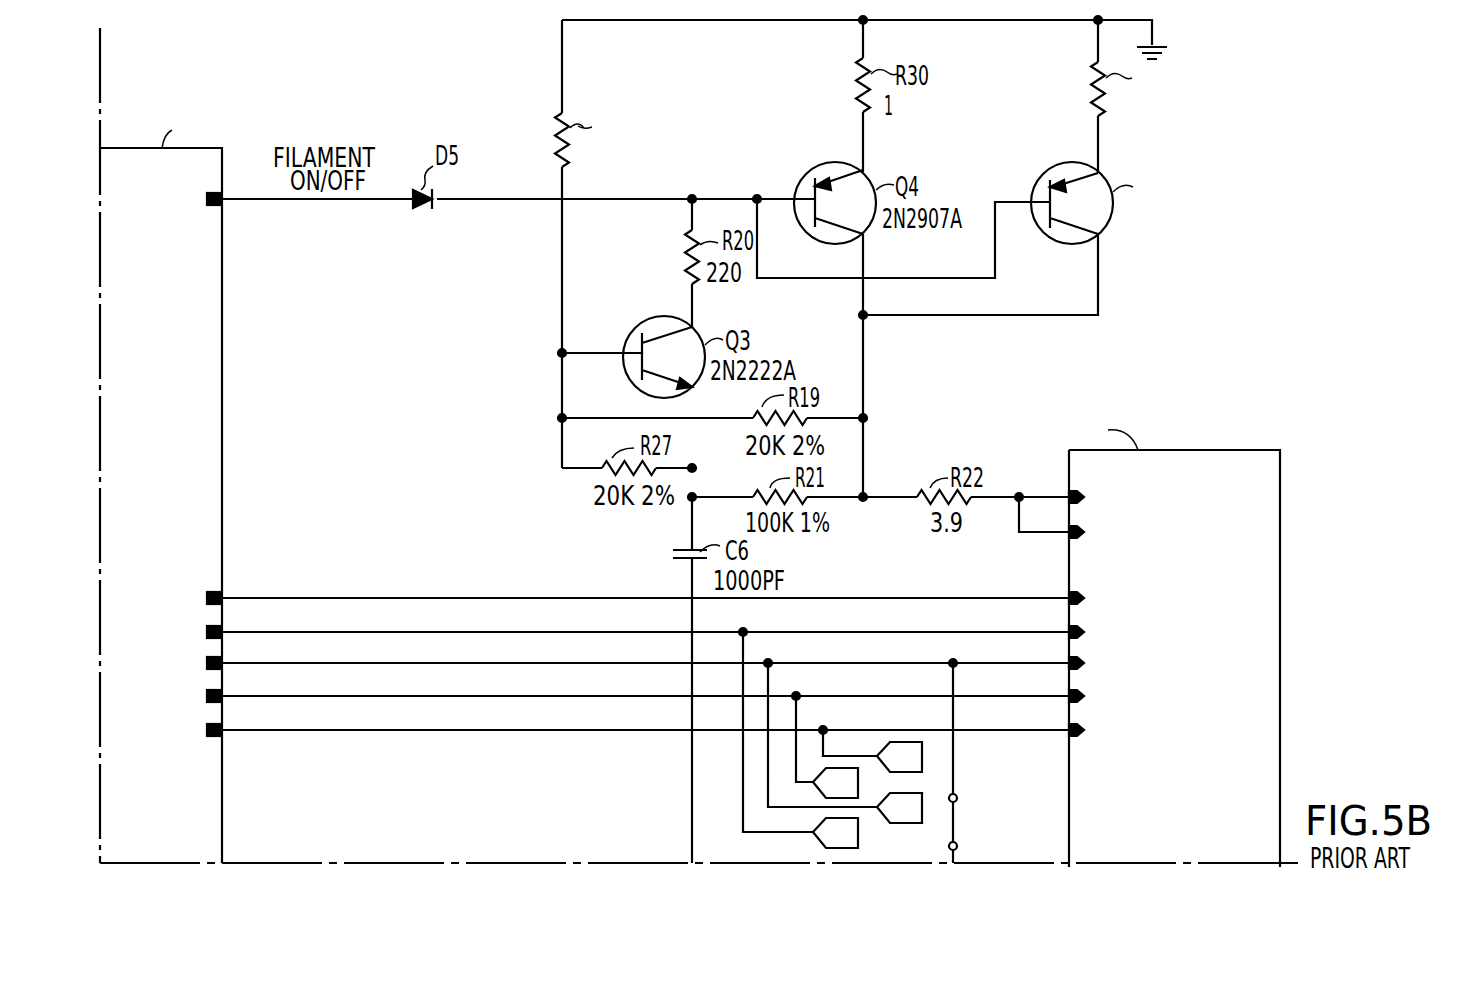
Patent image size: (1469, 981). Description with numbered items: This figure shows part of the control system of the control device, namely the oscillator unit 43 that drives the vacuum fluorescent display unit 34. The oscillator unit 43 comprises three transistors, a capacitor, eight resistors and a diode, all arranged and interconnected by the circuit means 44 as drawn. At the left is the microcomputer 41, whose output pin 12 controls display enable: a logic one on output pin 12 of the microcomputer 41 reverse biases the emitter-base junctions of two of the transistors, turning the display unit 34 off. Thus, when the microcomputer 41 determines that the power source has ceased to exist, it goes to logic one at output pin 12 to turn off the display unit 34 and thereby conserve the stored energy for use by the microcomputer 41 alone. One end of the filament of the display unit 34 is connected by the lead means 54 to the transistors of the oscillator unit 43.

The output pin 12 is at (228, 188).
The vacuum fluorescent display unit 34 is at (1280, 545).
The microcomputer 41 is at (222, 398).
The oscillator unit 43 is at (1180, 143).
The circuit means 44 is at (506, 46).
The lead means 54 is at (994, 496).